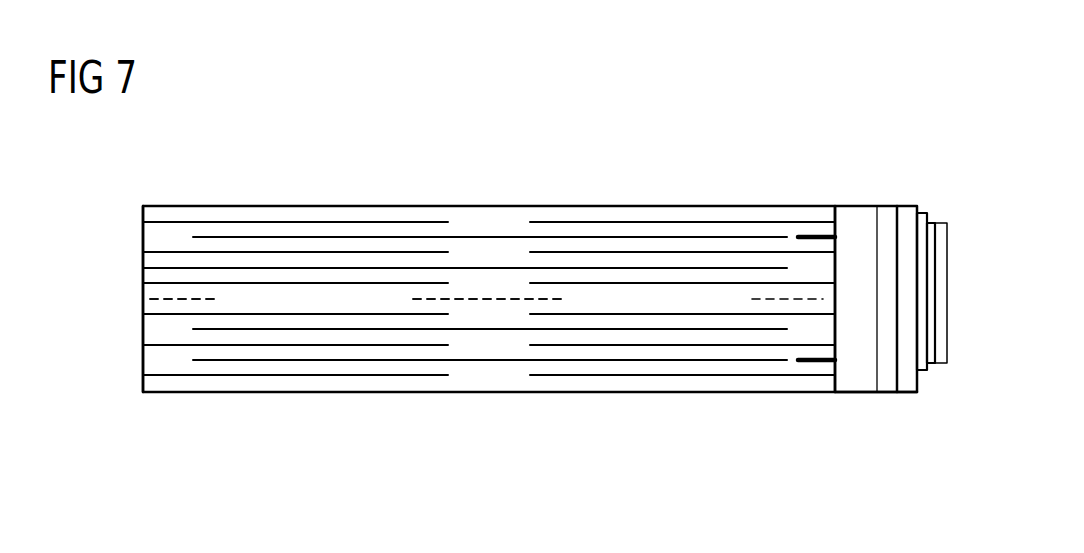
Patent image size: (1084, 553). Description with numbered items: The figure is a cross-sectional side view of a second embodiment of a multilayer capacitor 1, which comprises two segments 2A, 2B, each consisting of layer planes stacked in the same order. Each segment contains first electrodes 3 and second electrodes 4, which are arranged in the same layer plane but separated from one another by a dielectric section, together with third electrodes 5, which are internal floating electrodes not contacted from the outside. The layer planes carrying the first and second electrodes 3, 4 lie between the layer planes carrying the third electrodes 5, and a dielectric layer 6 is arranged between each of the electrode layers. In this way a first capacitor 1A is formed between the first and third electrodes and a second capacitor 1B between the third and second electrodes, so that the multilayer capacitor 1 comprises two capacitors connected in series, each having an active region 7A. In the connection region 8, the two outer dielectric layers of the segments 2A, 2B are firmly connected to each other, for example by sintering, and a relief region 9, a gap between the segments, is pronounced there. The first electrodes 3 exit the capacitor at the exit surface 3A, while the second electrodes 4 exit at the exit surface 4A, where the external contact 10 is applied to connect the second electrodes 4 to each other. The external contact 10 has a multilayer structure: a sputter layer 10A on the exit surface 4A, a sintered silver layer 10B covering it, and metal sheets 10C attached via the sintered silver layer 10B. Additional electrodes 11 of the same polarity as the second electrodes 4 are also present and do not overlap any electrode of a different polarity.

The multilayer capacitor 1 is at (801, 178).
The first capacitor 1A is at (449, 177).
The second capacitor 1B is at (784, 177).
The segment 2A is at (88, 218).
The segment 2B is at (88, 315).
The first electrode 3 is at (141, 252).
The exit surface 3A is at (116, 391).
The second electrode 4 is at (836, 252).
The exit surface 4A is at (856, 412).
The third electrode 5 is at (515, 267).
The dielectric layer 6 is at (141, 360).
The active region 7A is at (788, 130).
The connection region 8 is at (128, 317).
The relief region 9 is at (200, 320).
The external contact 10 is at (896, 242).
The sputter layer 10A is at (914, 198).
The sintered silver layer 10B is at (922, 211).
The metal sheet 10C is at (932, 216).
The additional electrode 11 is at (808, 362).